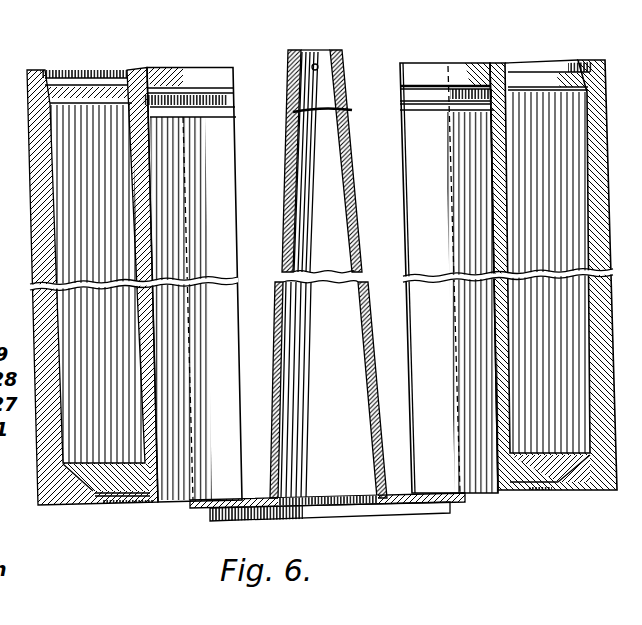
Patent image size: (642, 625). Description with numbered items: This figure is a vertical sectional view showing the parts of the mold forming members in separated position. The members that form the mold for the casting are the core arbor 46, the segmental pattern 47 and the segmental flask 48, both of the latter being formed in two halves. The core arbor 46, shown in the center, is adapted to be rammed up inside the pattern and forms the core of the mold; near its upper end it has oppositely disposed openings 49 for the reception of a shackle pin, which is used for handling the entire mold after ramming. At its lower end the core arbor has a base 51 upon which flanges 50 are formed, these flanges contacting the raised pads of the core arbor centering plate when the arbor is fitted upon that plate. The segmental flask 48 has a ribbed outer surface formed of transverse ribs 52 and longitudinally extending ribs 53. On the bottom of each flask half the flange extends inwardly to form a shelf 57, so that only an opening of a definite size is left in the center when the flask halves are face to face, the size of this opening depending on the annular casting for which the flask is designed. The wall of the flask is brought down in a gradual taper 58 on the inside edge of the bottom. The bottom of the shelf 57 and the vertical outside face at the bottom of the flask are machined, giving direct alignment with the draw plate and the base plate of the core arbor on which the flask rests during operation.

The core arbor 46 is at (318, 52).
The segmental pattern 47 is at (415, 147).
The segmental flask 48 is at (573, 52).
The openings 49 is at (319, 66).
The flanges 50 is at (443, 513).
The base 51 is at (467, 495).
The transverse ribs 52 is at (27, 157).
The longitudinally extending ribs 53 is at (33, 253).
The shelf 57 is at (533, 493).
The gradual taper 58 is at (578, 493).